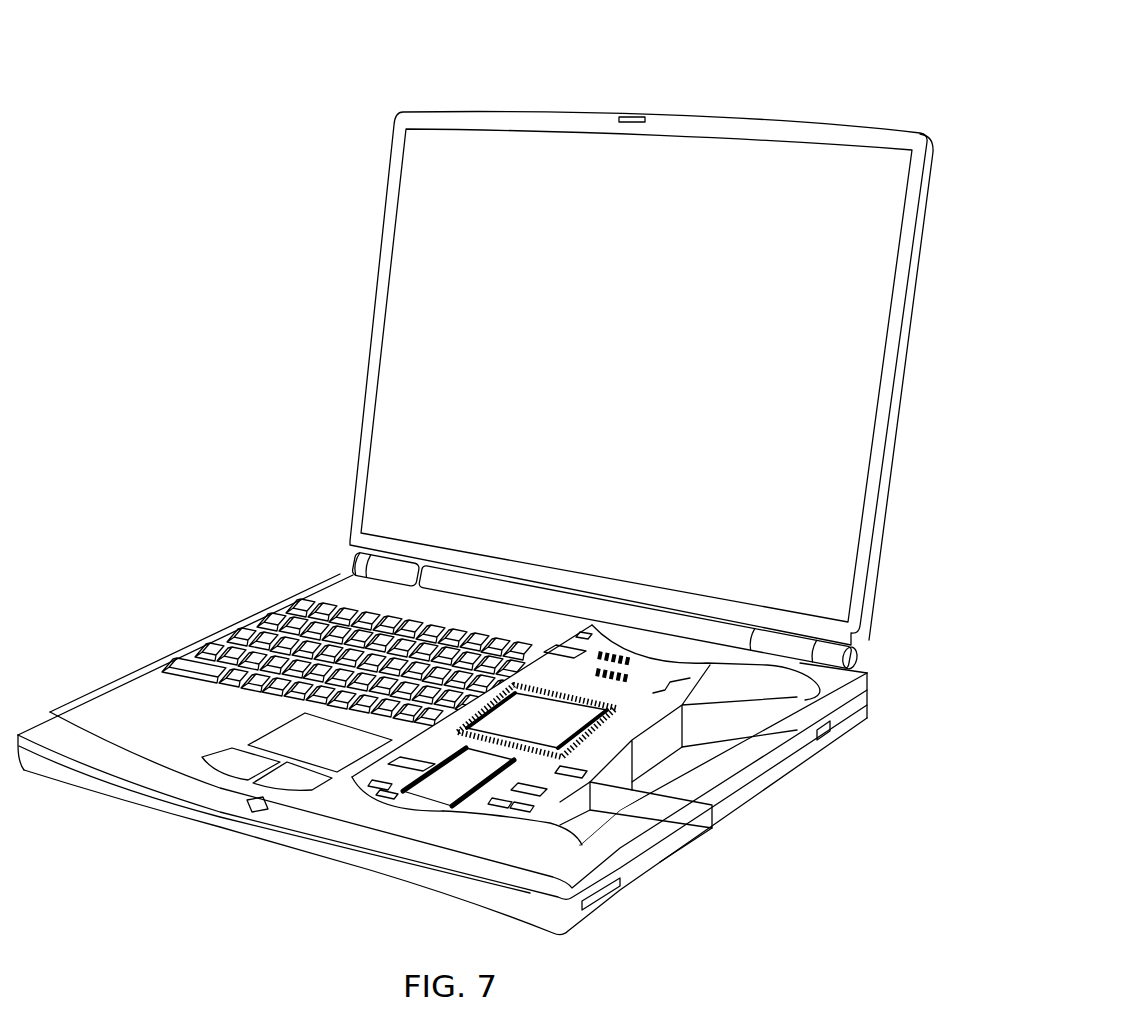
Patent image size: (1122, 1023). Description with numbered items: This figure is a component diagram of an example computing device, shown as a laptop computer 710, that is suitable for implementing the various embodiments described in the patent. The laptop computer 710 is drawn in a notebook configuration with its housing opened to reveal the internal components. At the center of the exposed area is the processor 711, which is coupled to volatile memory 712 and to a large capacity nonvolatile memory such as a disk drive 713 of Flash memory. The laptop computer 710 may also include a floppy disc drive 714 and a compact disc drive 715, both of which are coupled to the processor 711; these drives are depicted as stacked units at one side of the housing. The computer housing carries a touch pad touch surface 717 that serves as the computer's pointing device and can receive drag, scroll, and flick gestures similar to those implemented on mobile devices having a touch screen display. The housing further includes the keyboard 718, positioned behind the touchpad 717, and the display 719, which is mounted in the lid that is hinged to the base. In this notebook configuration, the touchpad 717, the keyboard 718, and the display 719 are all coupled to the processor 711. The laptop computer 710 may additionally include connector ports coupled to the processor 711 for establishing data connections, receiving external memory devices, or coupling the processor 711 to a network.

The laptop computer 710 is at (822, 107).
The processor 711 is at (552, 733).
The volatile memory 712 is at (462, 779).
The disk drive 713 is at (590, 826).
The floppy disc drive 714 is at (675, 770).
The compact disc (CD) drive 715 is at (752, 707).
The touch pad touch surface 717 is at (277, 742).
The keyboard 718 is at (227, 648).
The display 719 is at (857, 572).